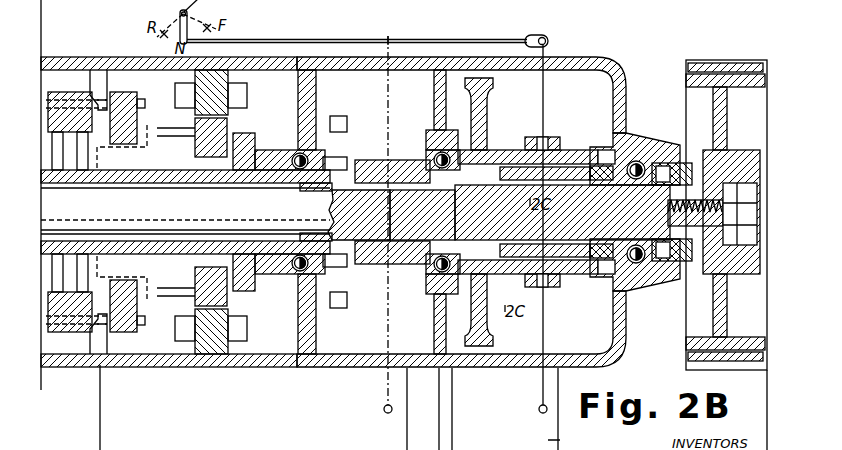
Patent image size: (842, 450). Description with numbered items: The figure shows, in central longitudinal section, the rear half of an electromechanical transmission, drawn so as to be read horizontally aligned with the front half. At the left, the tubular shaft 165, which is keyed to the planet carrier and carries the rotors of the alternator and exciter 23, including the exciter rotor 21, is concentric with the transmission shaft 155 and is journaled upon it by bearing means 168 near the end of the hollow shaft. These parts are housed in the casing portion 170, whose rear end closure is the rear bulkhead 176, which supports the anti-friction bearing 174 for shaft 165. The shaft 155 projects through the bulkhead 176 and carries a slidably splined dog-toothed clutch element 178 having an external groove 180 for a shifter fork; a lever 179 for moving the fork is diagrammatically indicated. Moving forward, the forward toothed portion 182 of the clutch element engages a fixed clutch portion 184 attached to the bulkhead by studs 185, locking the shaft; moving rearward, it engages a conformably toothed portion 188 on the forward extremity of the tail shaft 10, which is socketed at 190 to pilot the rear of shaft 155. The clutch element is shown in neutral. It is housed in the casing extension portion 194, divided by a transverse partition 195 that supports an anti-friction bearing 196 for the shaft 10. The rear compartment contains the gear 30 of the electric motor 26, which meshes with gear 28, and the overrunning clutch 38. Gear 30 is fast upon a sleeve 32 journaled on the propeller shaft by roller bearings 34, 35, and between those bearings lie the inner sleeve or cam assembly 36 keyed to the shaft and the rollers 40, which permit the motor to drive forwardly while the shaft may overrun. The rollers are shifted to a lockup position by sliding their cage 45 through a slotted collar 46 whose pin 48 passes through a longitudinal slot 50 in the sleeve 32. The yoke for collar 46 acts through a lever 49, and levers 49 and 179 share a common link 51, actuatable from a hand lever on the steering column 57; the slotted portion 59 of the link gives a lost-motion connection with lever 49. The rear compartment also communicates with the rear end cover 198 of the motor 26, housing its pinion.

The propeller shaft 10 is at (596, 205).
The exciter rotor 21 is at (198, 124).
The exciter 23 is at (74, 88).
The electric motor 26 is at (200, 413).
The gear 28 is at (485, 338).
The gear 30 is at (505, 72).
The sleeve 32 is at (518, 108).
The roller bearing 34 is at (470, 204).
The roller bearing 35 is at (604, 150).
The inner sleeve or cam assembly 36 is at (552, 205).
The overrunning clutch 38 is at (566, 142).
The rollers 40 is at (460, 259).
The cage 45 is at (552, 288).
The slotted collar 46 is at (560, 306).
The pin 48 is at (512, 134).
The lever 49 is at (566, 336).
The longitudinal slot 50 is at (538, 130).
The link 51 is at (452, 40).
The steering column 57 is at (200, 3).
The slotted portion 59 is at (541, 33).
The shaft 155 is at (100, 203).
The tubular shaft 165 is at (175, 186).
The bearing means 168 is at (290, 192).
The casing portion 170 is at (135, 43).
The anti-friction bearing 174 is at (326, 230).
The rear bulkhead 176 is at (308, 96).
The dog-toothed clutch element 178 is at (432, 140).
The lever 179 is at (386, 390).
The external groove 180 is at (372, 158).
The forward toothed portion 182 is at (352, 266).
The fixed clutch portion 184 is at (338, 218).
The studs 185 is at (344, 306).
The toothed portion 188 is at (396, 285).
The socket 190 is at (470, 232).
The casing extension portion 194 is at (362, 70).
The transverse partition 195 is at (436, 108).
The anti-friction bearing 196 is at (447, 199).
The rear end cover 198 is at (562, 440).